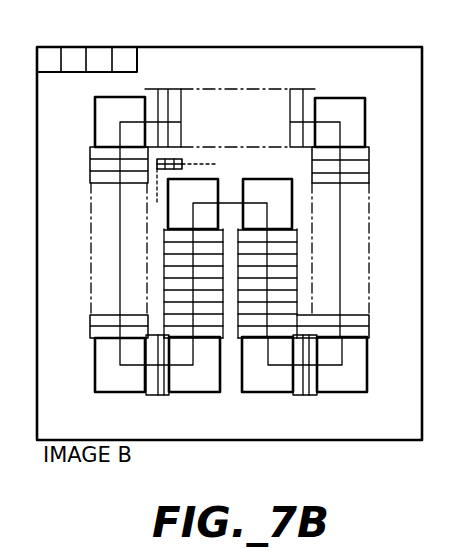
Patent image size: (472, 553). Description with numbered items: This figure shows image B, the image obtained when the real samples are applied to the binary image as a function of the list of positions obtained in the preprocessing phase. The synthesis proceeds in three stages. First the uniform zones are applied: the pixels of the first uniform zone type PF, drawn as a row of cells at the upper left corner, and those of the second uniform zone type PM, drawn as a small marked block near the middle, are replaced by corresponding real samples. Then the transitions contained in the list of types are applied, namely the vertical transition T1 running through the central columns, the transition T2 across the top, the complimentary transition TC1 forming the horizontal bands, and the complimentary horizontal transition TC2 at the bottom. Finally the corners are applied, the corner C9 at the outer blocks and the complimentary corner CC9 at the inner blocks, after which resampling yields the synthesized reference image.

The first uniform zone type PF is at (46, 50).
The transition T2 is at (176, 98).
The corner C9 is at (101, 127).
The complimentary transition TC1 is at (100, 153).
The second uniform zone type PM is at (153, 165).
The complimentary corner CC9 is at (212, 215).
The vertical transition T1 is at (217, 318).
The complimentary horizontal transition TC2 is at (157, 393).